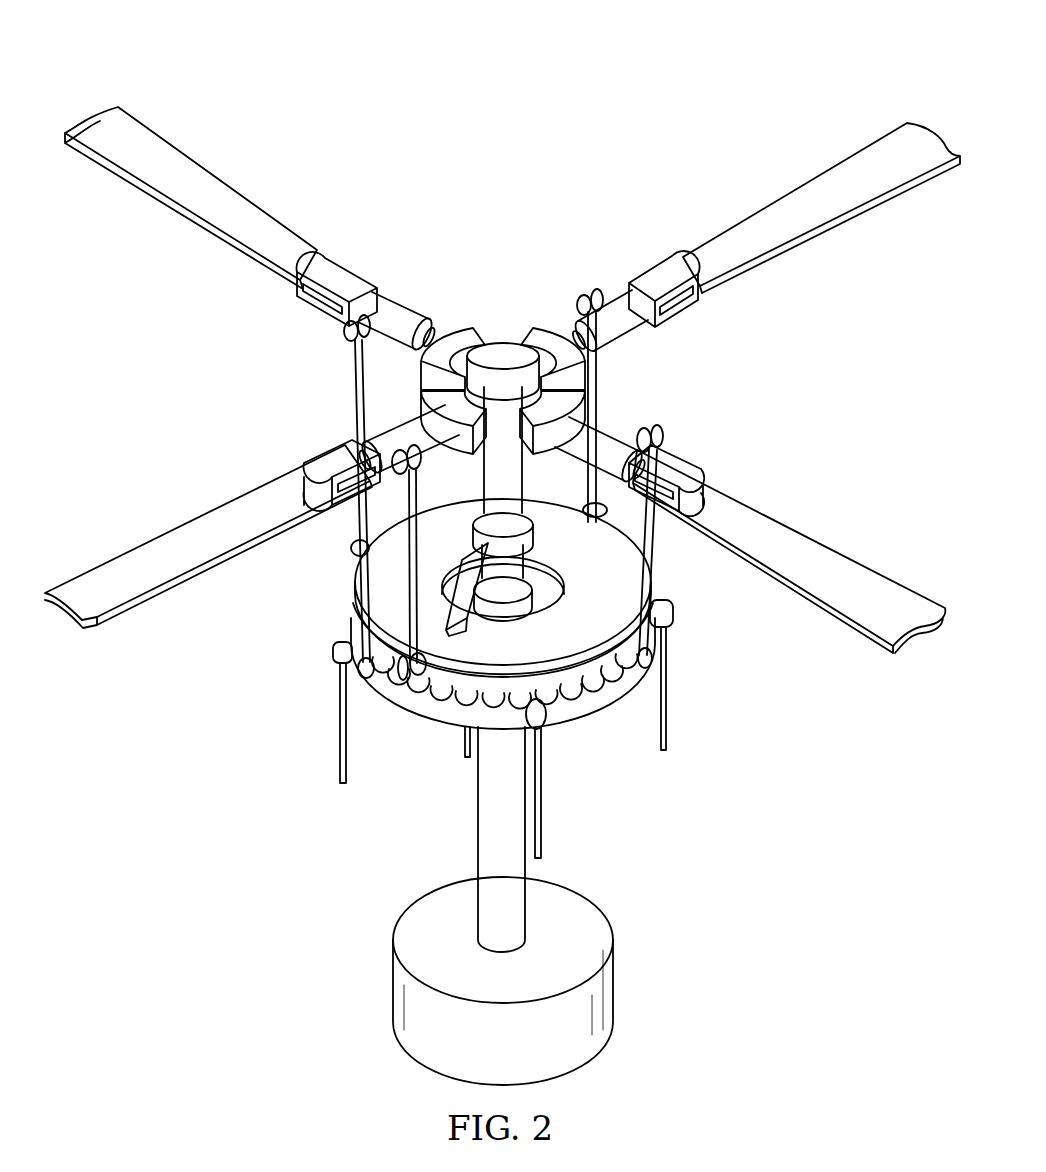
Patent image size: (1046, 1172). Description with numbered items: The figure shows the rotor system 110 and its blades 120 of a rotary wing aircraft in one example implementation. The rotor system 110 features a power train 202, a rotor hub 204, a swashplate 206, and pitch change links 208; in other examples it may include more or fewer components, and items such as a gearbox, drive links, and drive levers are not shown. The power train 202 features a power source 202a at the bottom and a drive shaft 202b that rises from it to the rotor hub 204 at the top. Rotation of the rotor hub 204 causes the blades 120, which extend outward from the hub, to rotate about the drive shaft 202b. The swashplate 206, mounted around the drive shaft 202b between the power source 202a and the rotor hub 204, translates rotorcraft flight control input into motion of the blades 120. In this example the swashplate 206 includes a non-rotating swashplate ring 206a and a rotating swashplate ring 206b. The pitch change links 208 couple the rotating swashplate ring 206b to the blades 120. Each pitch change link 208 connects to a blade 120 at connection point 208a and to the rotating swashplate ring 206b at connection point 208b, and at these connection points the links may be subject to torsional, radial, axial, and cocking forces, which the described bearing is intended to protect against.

The rotor system 110 is at (607, 70).
The blades 120 is at (199, 172).
The power train 202 is at (636, 886).
The power source 202a is at (613, 975).
The drive shaft 202b is at (478, 818).
The rotor hub 204 is at (458, 338).
The swashplate 206 is at (686, 590).
The non-rotating swashplate ring 206a is at (580, 707).
The rotating swashplate ring 206b is at (375, 580).
The pitch change links 208 is at (354, 384).
The connection point 208a is at (340, 334).
The connection point 208b is at (400, 670).